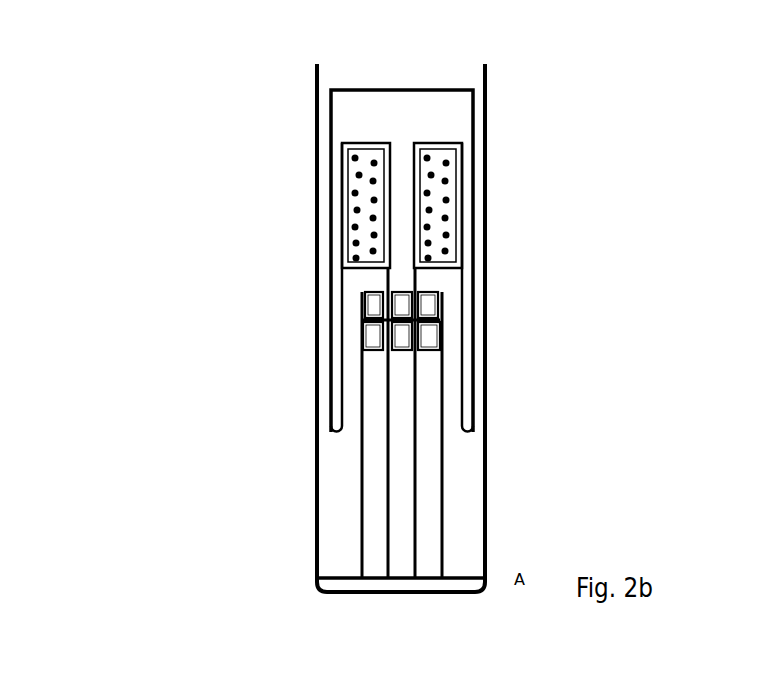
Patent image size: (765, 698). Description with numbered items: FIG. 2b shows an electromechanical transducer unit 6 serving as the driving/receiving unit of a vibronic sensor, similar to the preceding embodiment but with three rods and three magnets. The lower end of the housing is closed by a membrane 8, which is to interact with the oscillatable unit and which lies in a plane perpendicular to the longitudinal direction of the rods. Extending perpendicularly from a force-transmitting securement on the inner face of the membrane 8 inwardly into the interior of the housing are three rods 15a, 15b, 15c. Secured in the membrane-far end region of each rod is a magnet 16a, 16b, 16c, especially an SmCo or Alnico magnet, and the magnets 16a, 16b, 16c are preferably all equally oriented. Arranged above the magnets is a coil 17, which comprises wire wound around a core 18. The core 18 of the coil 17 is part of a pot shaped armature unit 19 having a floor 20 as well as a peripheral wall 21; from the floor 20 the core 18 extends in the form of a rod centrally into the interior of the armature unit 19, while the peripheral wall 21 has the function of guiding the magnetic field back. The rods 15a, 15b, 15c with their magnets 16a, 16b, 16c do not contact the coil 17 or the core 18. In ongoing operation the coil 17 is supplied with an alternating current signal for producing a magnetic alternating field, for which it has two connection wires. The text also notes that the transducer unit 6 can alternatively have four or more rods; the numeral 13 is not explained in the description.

The electromechanical transducer unit 6 is at (50, 3).
The membrane 8 is at (480, 594).
The housing tube 13 is at (486, 130).
The rod 15a is at (362, 479).
The rod 15b is at (404, 497).
The rod 15c is at (430, 562).
The magnet 16a is at (367, 319).
The magnet 16b is at (407, 348).
The magnet 16c is at (427, 311).
The coil 17 is at (451, 237).
The core 18 is at (414, 194).
The pot shaped armature unit 19 is at (486, 18).
The floor 20 is at (402, 129).
The peripheral wall 21 is at (336, 188).